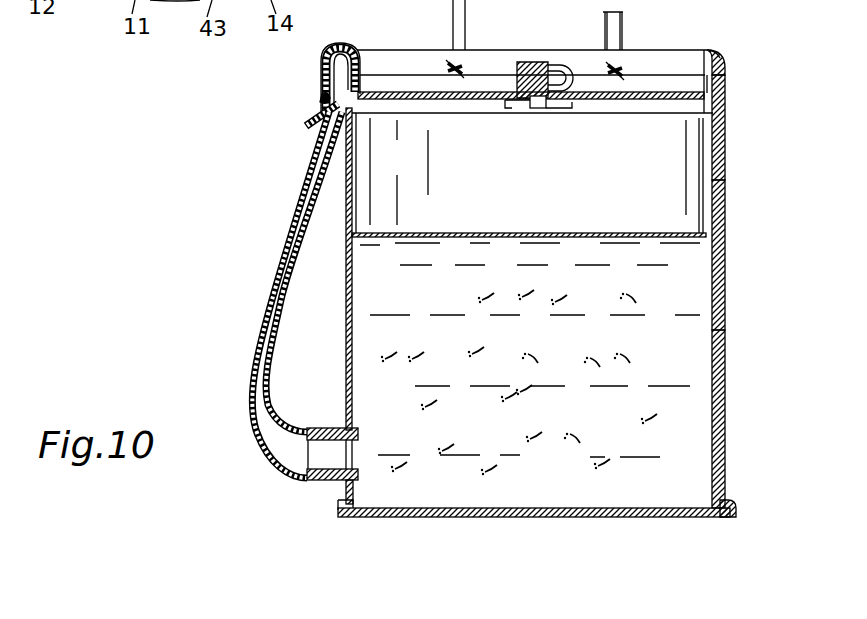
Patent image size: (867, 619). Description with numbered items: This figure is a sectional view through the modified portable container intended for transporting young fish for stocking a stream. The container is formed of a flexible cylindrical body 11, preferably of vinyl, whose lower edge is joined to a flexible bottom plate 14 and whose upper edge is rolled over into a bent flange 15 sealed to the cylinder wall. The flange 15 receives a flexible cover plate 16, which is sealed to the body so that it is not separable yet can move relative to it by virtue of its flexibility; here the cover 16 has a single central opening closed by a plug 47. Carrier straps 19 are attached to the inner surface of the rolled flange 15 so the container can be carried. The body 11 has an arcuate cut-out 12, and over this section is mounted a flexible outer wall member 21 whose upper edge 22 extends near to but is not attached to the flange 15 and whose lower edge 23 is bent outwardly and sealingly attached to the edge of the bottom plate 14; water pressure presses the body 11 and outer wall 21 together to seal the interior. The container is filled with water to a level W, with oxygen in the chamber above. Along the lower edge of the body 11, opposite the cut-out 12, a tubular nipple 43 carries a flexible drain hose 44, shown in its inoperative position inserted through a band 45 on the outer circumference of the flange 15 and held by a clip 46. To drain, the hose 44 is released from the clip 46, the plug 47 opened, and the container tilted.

The cylindrical body 11 is at (346, 198).
The cut-out 12 is at (712, 428).
The bottom plate 14 is at (546, 512).
The bent flange 15 is at (719, 66).
The cover plate 16 is at (405, 92).
The carrier straps 19 is at (615, 32).
The outer wall member 21 is at (725, 274).
The upper edge 22 is at (724, 151).
The lower edge 23 is at (727, 504).
The tubular nipple 43 is at (312, 455).
The flexible drain hose 44 is at (258, 331).
The band 45 is at (318, 48).
The clip 46 is at (318, 105).
The plug 47 is at (537, 62).
The water level W is at (664, 235).